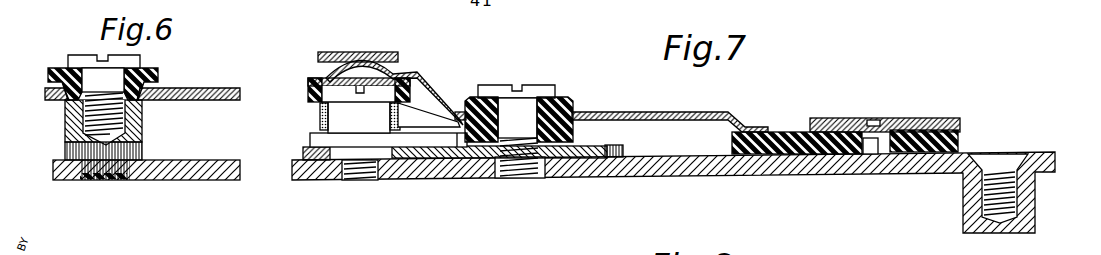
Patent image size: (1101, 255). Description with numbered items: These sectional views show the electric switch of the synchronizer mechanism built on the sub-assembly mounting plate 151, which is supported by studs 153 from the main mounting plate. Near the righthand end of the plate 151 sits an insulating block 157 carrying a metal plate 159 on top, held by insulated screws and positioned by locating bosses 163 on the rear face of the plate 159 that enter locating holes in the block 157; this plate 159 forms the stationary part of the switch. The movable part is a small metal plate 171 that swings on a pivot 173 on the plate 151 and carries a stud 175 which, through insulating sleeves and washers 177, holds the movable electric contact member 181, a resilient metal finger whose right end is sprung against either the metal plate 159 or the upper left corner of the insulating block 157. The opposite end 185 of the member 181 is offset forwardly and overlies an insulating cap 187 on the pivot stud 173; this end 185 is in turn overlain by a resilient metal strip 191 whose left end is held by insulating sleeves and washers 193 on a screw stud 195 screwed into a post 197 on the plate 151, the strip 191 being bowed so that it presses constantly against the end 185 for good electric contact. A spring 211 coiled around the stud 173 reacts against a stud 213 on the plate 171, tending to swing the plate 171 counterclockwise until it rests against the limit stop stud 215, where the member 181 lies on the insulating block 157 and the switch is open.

In FIG. 6, the sub-assembly mounting plate 151 is at (184, 170).
In FIG. 7, the sub-assembly mounting plate 151 is at (652, 170).
In FIG. 7, the studs 153 is at (1031, 205).
In FIG. 7, the insulating block 157 is at (775, 132).
In FIG. 7, the metal plate 159 is at (925, 107).
In FIG. 7, the locating bosses 163 is at (873, 157).
In FIG. 7, the metal plate 171 is at (317, 134).
In FIG. 7, the pivot 173 is at (359, 116).
In FIG. 7, the stud 175 is at (537, 87).
In FIG. 7, the insulating sleeves and washers 177 is at (577, 128).
In FIG. 7, the movable electric contact member 181 is at (675, 112).
In FIG. 7, the offset end 185 is at (394, 74).
In FIG. 7, the insulating cap 187 is at (312, 82).
In FIG. 6, the metal strip 191 is at (222, 88).
In FIG. 7, the metal strip 191 is at (402, 39).
In FIG. 6, the insulating sleeves and washers 193 is at (178, 96).
In FIG. 6, the screw stud 195 is at (80, 55).
In FIG. 6, the post 197 is at (141, 137).
In FIG. 7, the spring 211 is at (322, 108).
In FIG. 7, the stud 213 is at (423, 118).
In FIG. 7, the stud 215 is at (625, 148).